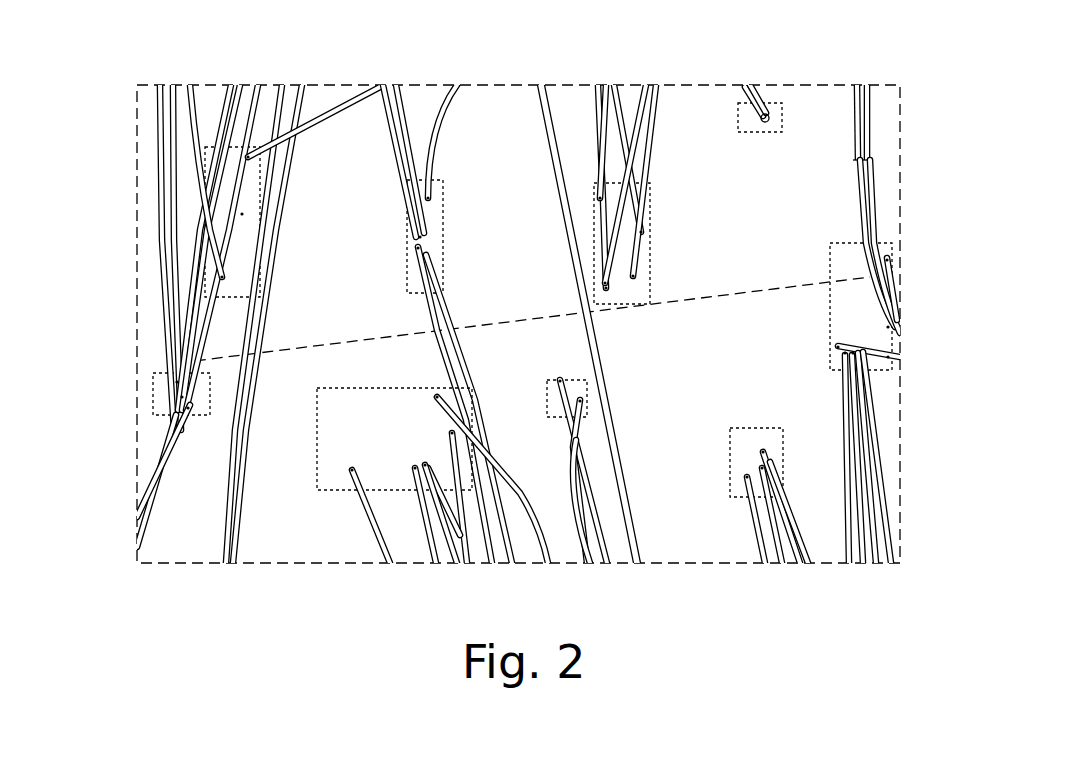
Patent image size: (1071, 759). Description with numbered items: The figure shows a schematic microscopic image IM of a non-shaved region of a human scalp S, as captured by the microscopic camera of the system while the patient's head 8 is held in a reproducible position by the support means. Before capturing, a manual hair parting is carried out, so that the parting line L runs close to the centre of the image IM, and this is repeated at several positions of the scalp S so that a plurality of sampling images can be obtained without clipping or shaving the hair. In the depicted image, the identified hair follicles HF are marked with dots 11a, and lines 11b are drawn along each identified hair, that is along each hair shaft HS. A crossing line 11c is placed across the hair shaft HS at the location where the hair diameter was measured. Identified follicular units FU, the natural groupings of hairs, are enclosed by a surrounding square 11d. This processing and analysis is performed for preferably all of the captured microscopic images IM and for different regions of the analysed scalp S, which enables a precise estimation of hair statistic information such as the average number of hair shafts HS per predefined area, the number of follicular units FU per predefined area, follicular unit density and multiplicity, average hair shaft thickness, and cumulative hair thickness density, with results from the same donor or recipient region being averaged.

The patient's head 8 is at (410, 475).
The dots 11a is at (222, 277).
The lines 11b is at (345, 103).
The crossing line 11c is at (343, 88).
The surrounding square 11d is at (216, 146).
The hair shaft HS is at (398, 112).
The hair follicle HF is at (745, 468).
The follicular unit FU is at (440, 223).
The microscopic image IM is at (833, 85).
The parting line L is at (748, 292).
The scalp S is at (695, 543).